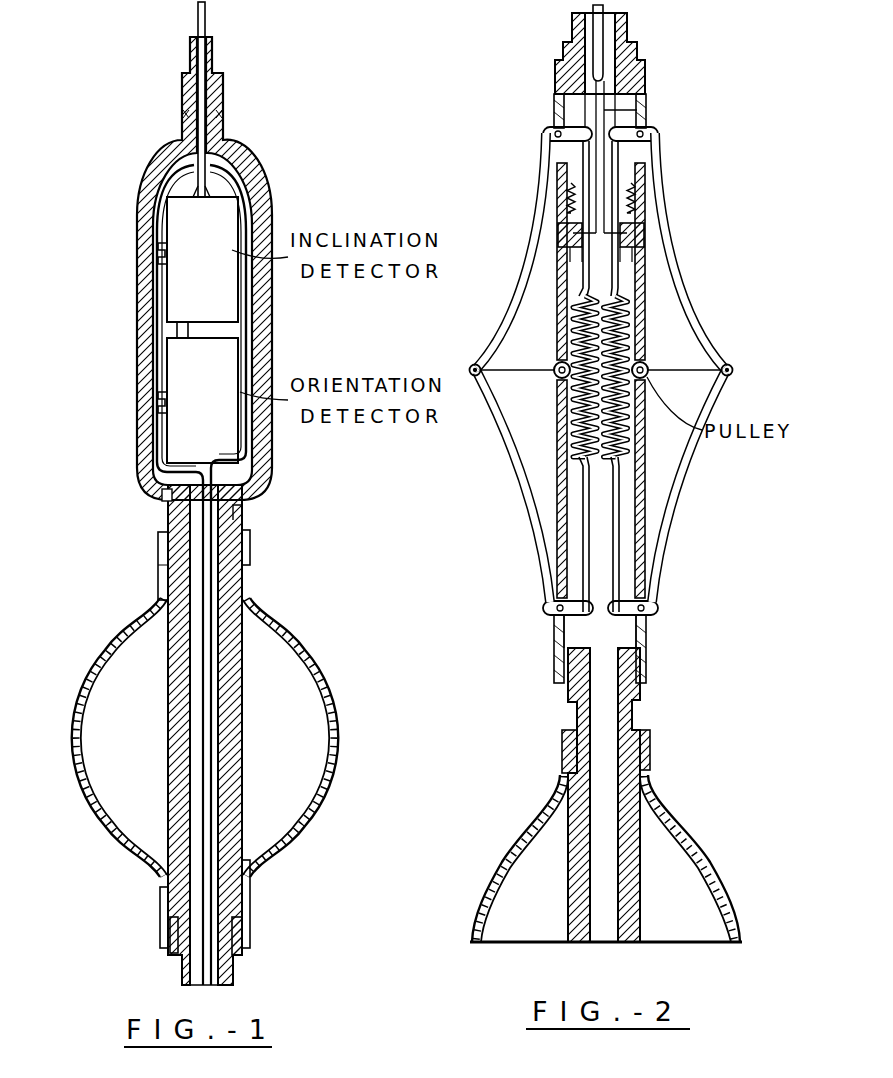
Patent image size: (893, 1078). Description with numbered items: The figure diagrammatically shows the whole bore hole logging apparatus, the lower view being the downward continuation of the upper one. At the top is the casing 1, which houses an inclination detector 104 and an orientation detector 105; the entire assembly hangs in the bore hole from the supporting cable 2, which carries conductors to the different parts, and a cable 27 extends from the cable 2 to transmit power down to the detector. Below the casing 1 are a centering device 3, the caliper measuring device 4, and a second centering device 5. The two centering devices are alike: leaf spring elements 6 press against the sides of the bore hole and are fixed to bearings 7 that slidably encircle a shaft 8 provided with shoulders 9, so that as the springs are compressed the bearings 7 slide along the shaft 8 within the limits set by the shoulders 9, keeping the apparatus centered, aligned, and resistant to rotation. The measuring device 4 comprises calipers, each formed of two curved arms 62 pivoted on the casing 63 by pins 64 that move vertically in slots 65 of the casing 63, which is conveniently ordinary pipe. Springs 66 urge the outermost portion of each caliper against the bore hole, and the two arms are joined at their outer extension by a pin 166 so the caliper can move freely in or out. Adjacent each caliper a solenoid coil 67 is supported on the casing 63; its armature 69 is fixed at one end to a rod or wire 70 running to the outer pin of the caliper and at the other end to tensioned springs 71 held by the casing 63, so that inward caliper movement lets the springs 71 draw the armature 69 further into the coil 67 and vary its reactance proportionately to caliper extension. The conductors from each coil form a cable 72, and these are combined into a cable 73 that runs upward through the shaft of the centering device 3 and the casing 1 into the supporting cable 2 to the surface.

In FIG. 1, the casing 1 is at (272, 211).
In FIG. 1, the cable 2 is at (205, 17).
In FIG. 1, the centering device 3 is at (212, 737).
In FIG. 2, the measuring device 4 is at (729, 357).
In FIG. 2, the centering device 5 is at (592, 858).
In FIG. 1, the spring elements 6 is at (85, 693).
In FIG. 2, the spring elements 6 is at (731, 893).
In FIG. 1, the bearings 7 is at (170, 526).
In FIG. 2, the bearings 7 is at (563, 747).
In FIG. 1, the shaft 8 is at (232, 516).
In FIG. 2, the shaft 8 is at (641, 713).
In FIG. 1, the shoulders 9 is at (164, 497).
In FIG. 2, the shoulders 9 is at (569, 704).
In FIG. 1, the cable 27 is at (196, 196).
In FIG. 2, the arms 62 is at (510, 312).
In FIG. 2, the casing 63 is at (662, 278).
In FIG. 2, the pins 64 is at (644, 134).
In FIG. 2, the slots 65 is at (556, 111).
In FIG. 2, the springs 66 is at (600, 254).
In FIG. 2, the solenoid coils 67 is at (646, 236).
In FIG. 2, the armature 69 is at (558, 240).
In FIG. 2, the rod or wire 70 is at (727, 393).
In FIG. 2, the springs 71 is at (562, 196).
In FIG. 2, the cable 72 is at (645, 105).
In FIG. 1, the cable 73 is at (213, 683).
In FIG. 2, the cable 73 is at (612, 30).
In FIG. 1, the inclination detector 104 is at (162, 300).
In FIG. 1, the orientation detector 105 is at (162, 448).
In FIG. 2, the pin 166 is at (474, 366).